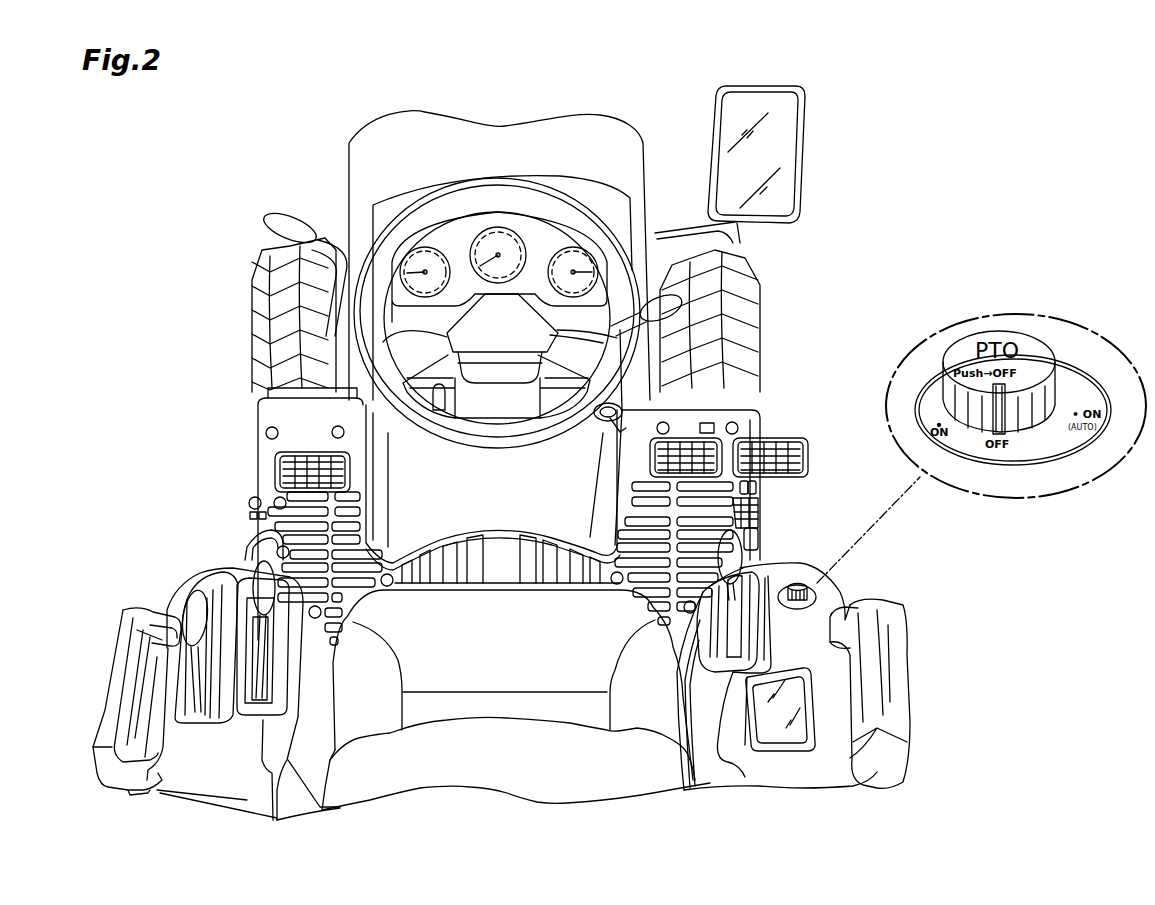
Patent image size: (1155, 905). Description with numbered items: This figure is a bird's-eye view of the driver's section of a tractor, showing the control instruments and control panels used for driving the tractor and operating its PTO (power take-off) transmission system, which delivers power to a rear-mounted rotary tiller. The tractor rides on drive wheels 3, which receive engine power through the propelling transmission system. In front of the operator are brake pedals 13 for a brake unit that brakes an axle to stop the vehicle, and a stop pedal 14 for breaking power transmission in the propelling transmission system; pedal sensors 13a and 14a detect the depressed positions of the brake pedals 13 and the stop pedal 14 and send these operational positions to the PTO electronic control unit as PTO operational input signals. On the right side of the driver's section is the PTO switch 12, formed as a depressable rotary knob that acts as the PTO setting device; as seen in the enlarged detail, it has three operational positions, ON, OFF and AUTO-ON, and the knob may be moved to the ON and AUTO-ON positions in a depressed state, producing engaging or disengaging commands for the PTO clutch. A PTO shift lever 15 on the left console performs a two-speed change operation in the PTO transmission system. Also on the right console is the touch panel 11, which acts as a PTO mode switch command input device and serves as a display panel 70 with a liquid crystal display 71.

The drive wheels 3 is at (753, 300).
The touch panel 11 is at (833, 747).
The PTO switch 12 is at (795, 585).
The brake pedals 13 is at (673, 428).
The pedal sensors 13a is at (775, 438).
The stop pedal 14 is at (232, 477).
The pedal sensors 14a is at (270, 470).
The PTO shift lever 15 is at (190, 600).
The display panel 70 is at (773, 732).
The liquid crystal display 71 is at (833, 747).